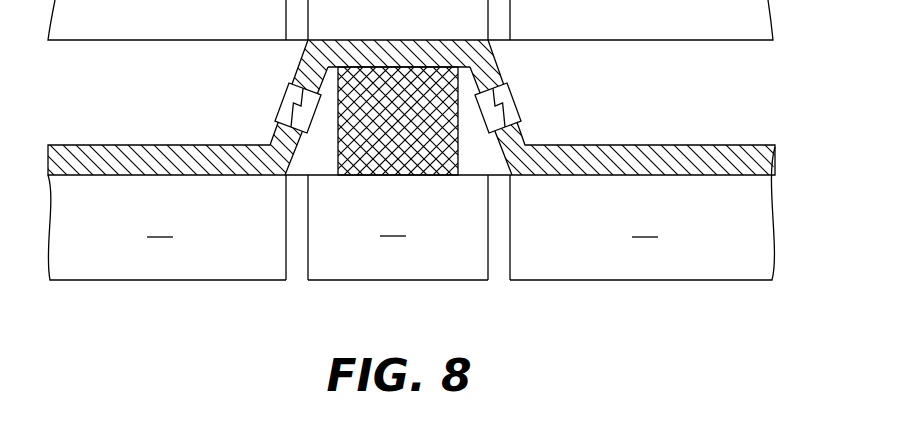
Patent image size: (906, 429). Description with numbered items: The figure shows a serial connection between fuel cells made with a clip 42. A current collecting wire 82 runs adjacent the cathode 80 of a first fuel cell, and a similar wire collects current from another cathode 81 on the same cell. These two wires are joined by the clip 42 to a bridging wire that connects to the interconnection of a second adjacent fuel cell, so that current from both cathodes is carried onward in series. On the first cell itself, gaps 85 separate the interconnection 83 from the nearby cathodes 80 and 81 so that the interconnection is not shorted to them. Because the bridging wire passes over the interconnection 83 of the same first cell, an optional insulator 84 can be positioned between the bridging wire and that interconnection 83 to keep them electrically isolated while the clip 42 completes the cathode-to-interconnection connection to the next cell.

The clip 42 is at (286, 100).
The cathode 80 is at (167, 227).
The cathode 81 is at (642, 213).
The current collecting wire 82 is at (117, 153).
The interconnection 83 is at (398, 246).
The insulator 84 is at (438, 145).
The gaps 85 is at (294, 258).